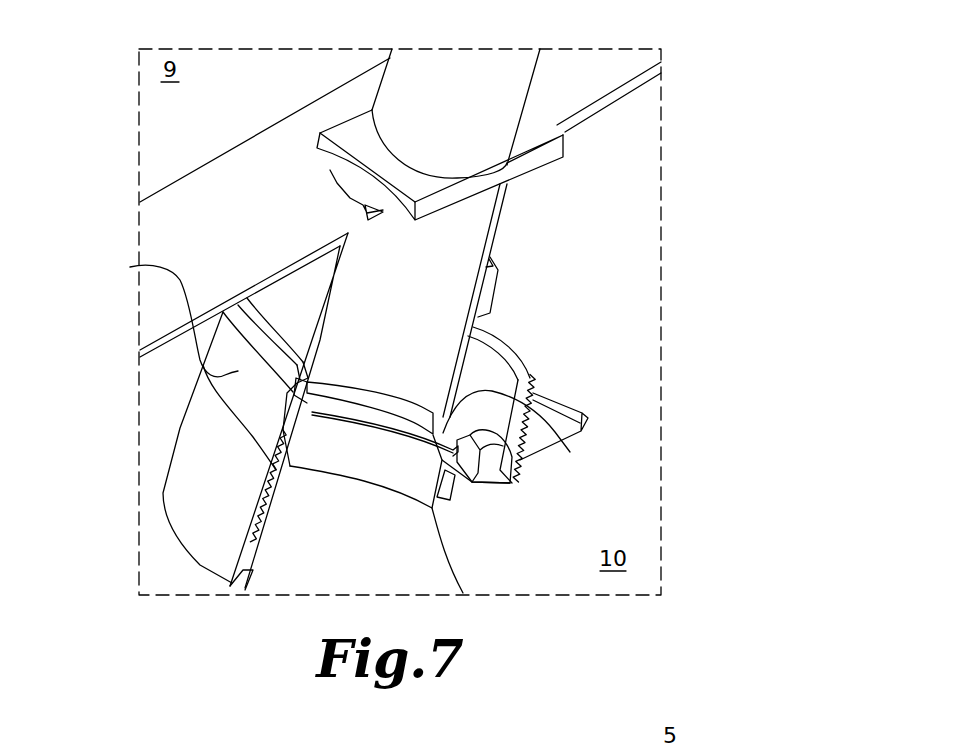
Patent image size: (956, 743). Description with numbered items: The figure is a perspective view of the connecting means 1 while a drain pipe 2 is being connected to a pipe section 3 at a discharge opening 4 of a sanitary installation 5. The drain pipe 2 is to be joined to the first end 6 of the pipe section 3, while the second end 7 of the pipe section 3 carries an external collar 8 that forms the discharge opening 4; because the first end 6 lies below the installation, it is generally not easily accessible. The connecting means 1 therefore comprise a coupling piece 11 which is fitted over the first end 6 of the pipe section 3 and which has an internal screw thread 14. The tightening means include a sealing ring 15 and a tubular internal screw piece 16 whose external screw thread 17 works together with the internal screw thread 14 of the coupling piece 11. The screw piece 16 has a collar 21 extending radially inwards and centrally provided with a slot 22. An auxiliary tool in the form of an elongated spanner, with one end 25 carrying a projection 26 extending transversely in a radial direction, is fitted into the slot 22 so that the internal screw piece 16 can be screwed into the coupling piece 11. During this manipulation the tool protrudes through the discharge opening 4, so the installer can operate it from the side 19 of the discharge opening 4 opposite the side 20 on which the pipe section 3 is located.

The connecting means 1 is at (612, 163).
The drain pipe 2 is at (420, 560).
The pipe section 3 is at (418, 265).
The discharge opening 4 is at (348, 233).
The sanitary installation 5 is at (161, 131).
The first end 6 is at (430, 370).
The second end 7 is at (482, 203).
The external collar 8 is at (217, 210).
The coupling piece 11 is at (130, 267).
The internal screw thread 14 is at (256, 540).
The sealing ring 15 is at (300, 438).
The tubular internal screw piece 16 is at (530, 377).
The external screw thread 17 is at (557, 394).
The side of the discharge opening 19 is at (224, 90).
The side with pipe section 20 is at (630, 305).
The collar 21 is at (483, 430).
The slot 22 is at (522, 402).
The end 25 is at (622, 117).
The projection 26 is at (533, 127).